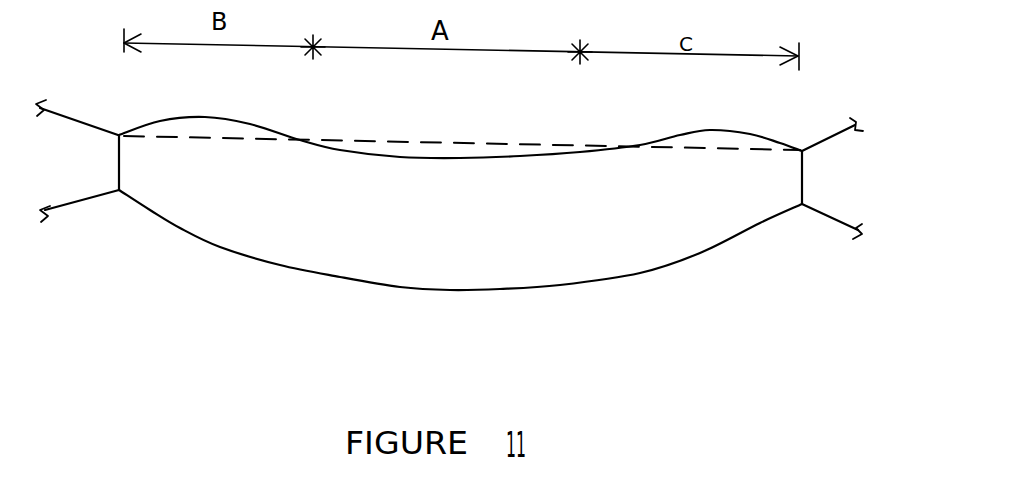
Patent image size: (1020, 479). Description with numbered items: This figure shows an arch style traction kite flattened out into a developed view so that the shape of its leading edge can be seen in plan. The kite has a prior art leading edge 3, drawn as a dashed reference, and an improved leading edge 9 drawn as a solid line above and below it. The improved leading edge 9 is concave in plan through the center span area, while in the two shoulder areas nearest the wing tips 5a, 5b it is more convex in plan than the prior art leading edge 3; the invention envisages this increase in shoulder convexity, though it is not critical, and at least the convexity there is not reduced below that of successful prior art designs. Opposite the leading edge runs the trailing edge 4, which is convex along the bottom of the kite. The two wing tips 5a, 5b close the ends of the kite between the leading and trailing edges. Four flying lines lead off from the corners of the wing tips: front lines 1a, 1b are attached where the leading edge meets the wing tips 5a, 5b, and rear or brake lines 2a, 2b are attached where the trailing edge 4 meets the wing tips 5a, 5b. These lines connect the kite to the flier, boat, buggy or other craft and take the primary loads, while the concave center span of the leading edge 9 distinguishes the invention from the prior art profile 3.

The front line 1a is at (73, 117).
The front line 1b is at (825, 137).
The brake line 2a is at (78, 205).
The brake line 2b is at (825, 215).
The leading edge 3 is at (428, 143).
The trailing edge 4 is at (577, 285).
The wing tip 5a is at (118, 167).
The wing tip 5b is at (804, 174).
The leading edge 9 is at (440, 158).